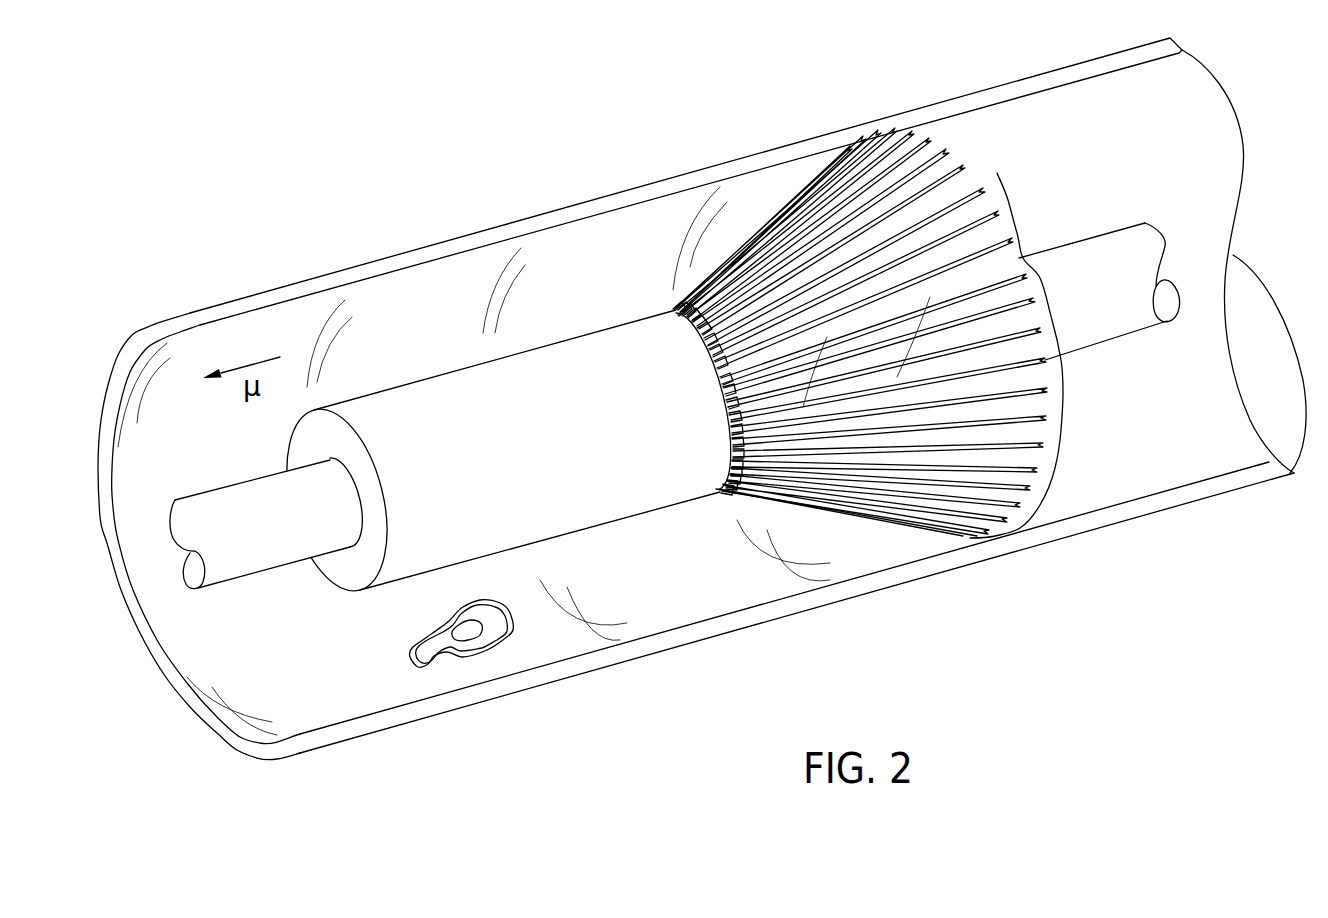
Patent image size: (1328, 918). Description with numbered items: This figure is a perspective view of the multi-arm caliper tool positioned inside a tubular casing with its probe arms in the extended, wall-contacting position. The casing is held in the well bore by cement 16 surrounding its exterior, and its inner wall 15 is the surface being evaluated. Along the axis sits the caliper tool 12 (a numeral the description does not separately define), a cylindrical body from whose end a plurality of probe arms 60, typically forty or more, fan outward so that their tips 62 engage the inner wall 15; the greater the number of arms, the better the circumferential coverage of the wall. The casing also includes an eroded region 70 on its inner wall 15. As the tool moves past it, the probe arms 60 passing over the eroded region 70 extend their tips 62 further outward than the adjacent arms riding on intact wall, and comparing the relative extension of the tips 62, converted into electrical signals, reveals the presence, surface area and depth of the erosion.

The roller / drum 12 is at (553, 343).
The inner wall 15 is at (477, 300).
The cement 16 is at (506, 223).
The probe arms 60 is at (960, 170).
The probe arm tips 62 is at (953, 160).
The eroded region 70 is at (510, 632).